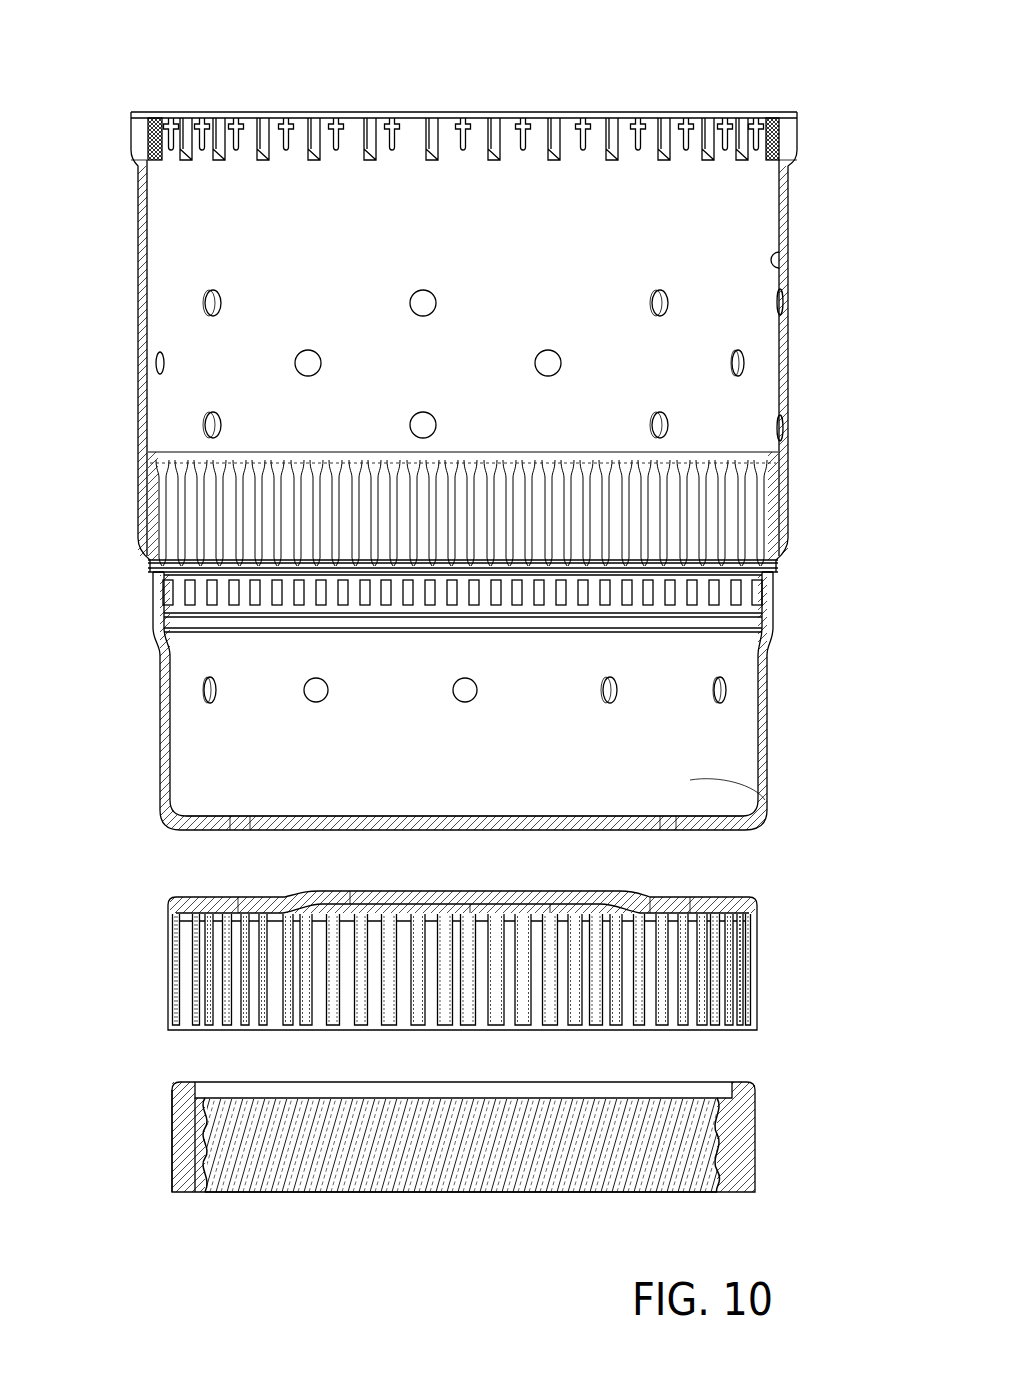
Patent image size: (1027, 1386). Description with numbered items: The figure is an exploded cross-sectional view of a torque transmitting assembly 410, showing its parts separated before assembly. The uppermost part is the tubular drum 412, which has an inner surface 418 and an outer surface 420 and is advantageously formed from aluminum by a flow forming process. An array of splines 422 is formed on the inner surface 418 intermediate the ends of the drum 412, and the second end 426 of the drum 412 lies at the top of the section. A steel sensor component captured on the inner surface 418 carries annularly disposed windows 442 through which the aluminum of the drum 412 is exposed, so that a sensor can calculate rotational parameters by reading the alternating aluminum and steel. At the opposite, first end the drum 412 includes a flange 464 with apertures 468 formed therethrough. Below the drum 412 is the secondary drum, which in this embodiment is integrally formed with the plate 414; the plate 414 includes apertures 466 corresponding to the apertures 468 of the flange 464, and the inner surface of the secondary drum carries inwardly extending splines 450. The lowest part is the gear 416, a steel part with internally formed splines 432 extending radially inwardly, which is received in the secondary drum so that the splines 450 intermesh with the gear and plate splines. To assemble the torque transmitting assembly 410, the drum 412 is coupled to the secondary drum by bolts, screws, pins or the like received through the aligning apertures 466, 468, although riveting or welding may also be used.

The torque transmitting assembly 410 is at (110, 42).
The drum 412 is at (792, 223).
The plate 414 is at (760, 898).
The gear 416 is at (762, 1140).
The inner surface 418 is at (783, 271).
The outer surface 420 is at (788, 306).
The splines 422 is at (750, 510).
The second end 426 is at (786, 110).
The internally formed splines 432 is at (247, 1165).
The windows 442 is at (237, 598).
The inwardly extending splines 450 is at (247, 975).
The flange 464 is at (716, 827).
The apertures 466 is at (668, 822).
The apertures 468 is at (650, 902).